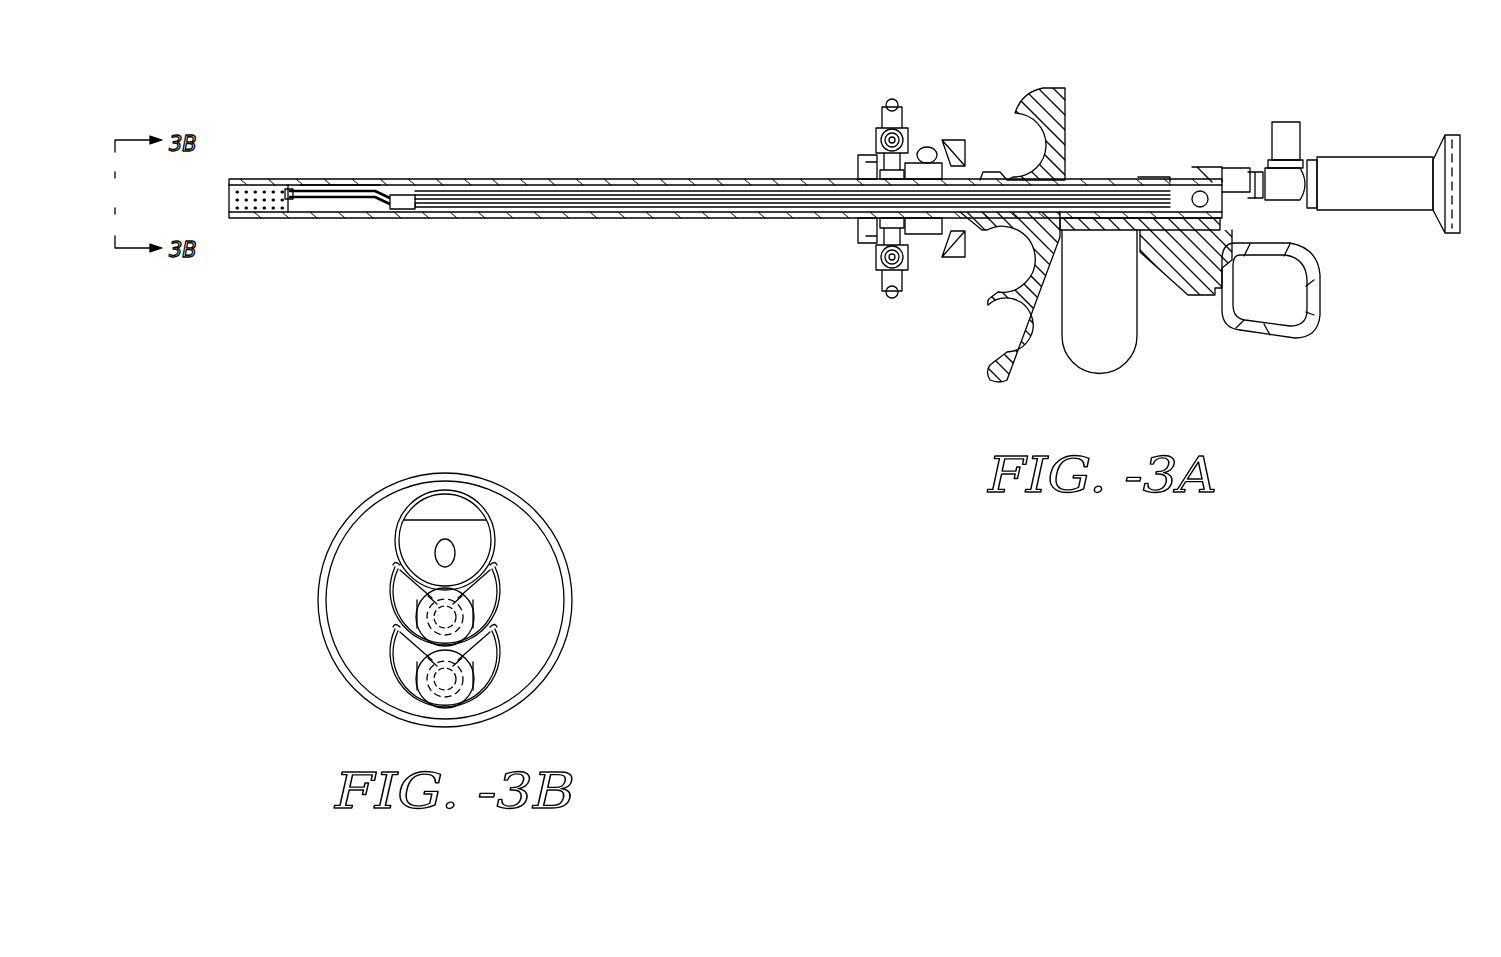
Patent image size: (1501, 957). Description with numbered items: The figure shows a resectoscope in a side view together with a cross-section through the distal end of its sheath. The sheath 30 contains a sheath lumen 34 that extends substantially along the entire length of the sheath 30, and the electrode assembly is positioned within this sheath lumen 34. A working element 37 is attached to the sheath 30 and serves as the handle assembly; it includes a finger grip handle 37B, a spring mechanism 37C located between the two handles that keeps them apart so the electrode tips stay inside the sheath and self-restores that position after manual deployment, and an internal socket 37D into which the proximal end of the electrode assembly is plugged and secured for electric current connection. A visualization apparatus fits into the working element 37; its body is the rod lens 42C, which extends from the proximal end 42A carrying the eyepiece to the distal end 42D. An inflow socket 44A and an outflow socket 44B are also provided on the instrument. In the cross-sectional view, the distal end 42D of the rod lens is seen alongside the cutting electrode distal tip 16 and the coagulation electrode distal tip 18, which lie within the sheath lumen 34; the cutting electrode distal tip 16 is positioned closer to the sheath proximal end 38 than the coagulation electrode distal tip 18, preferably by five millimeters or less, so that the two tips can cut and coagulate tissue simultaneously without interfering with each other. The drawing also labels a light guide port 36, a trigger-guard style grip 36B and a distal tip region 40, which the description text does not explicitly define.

In FIG. 3B, the cutting electrode distal tip 16 is at (382, 655).
In FIG. 3B, the coagulation electrode distal tip 18 is at (395, 593).
In FIG. 3A, the sheath 30 is at (481, 179).
In FIG. 3B, the sheath 30 is at (572, 531).
In FIG. 3B, the sheath lumen 34 is at (547, 607).
In FIG. 3A, the light guide port 36 is at (1289, 122).
In FIG. 3A, the trigger guard handle 36B is at (1296, 339).
In FIG. 3A, the working element 37 is at (1096, 152).
In FIG. 3A, the finger grip handle 37B is at (1000, 380).
In FIG. 3A, the spring mechanism 37C is at (1220, 208).
In FIG. 3A, the internal socket 37D is at (1215, 200).
In FIG. 3A, the sheath proximal end 38 is at (955, 140).
In FIG. 3A, the distal tip 40 is at (229, 178).
In FIG. 3A, the proximal end 42A is at (1450, 165).
In FIG. 3A, the rod lens 42C is at (631, 191).
In FIG. 3A, the distal end 42D is at (292, 185).
In FIG. 3B, the distal end 42D is at (412, 548).
In FIG. 3A, the inflow socket 44A is at (892, 99).
In FIG. 3A, the outflow socket 44B is at (892, 298).